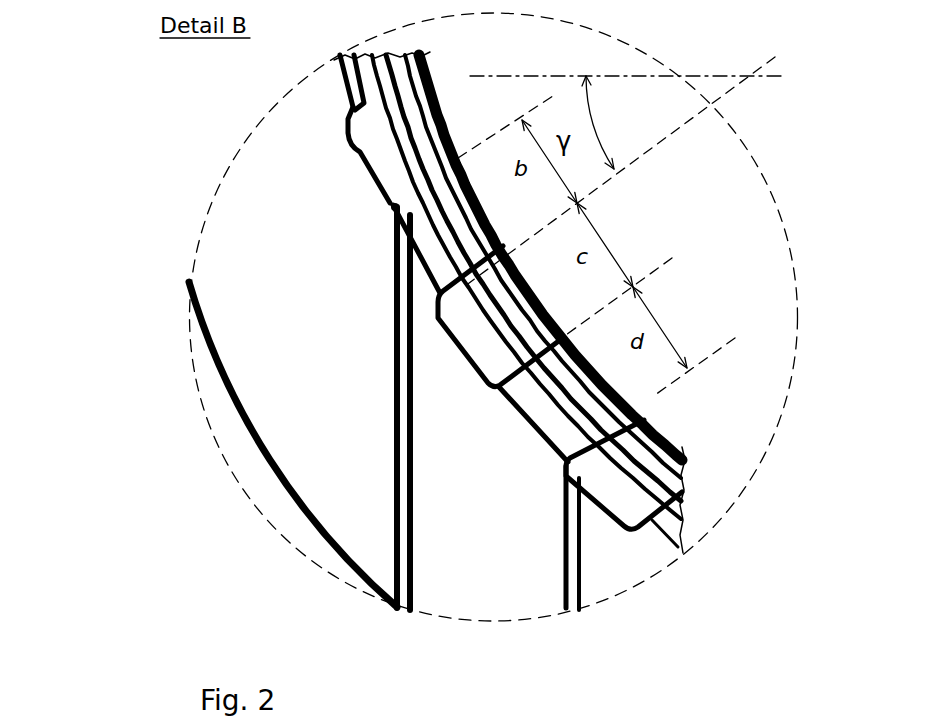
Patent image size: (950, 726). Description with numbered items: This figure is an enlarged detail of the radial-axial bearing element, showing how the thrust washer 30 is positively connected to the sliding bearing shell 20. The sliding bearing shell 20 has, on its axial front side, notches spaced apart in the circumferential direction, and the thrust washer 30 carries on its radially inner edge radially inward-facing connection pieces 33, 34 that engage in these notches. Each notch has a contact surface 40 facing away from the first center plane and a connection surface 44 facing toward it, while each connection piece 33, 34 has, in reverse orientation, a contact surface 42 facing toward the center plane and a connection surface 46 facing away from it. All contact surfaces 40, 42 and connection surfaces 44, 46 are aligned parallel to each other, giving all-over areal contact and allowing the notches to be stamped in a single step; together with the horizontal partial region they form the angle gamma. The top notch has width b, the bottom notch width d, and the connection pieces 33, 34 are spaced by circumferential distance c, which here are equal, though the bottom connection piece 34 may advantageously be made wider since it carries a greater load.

The sliding bearing shell 20 is at (672, 487).
The thrust washer 30 is at (608, 562).
The connection piece 33 is at (423, 213).
The connection piece 34 is at (545, 420).
The contact surface 40 is at (460, 275).
The contact surface 42 is at (505, 322).
The connection surface 44 is at (460, 220).
The connection surface 46 is at (400, 178).